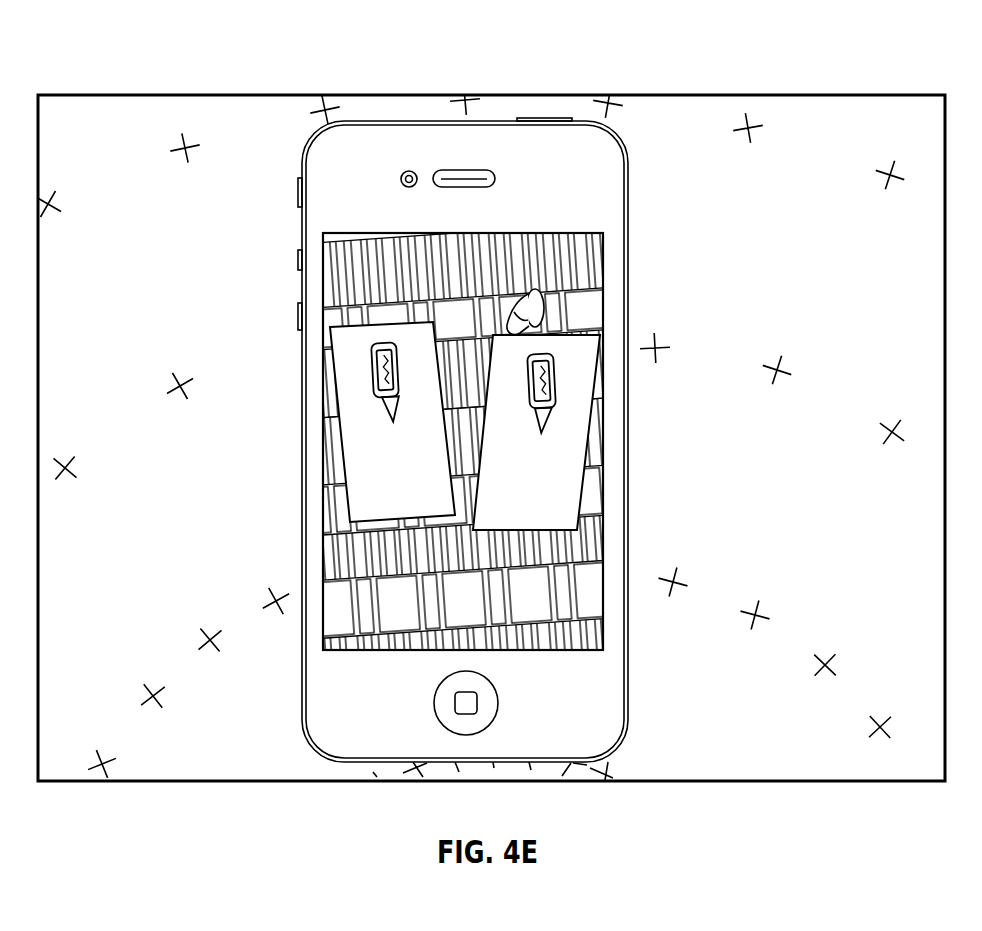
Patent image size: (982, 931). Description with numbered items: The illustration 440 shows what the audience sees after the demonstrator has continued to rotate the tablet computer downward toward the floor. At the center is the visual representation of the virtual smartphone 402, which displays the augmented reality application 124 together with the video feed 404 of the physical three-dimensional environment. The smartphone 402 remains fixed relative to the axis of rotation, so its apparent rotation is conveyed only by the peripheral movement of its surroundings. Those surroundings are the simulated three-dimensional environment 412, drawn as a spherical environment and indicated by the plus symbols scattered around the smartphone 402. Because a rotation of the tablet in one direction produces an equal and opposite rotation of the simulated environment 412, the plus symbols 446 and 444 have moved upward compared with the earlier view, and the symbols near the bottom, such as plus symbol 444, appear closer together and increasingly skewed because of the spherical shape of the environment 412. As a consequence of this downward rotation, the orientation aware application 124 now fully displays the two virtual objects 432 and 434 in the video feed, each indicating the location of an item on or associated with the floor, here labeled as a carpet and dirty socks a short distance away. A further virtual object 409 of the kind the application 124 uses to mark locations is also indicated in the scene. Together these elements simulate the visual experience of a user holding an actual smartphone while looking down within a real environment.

The simulated three-dimensional environment 412 is at (133, 107).
The virtual object 409 is at (858, 82).
The virtual smartphone 402 is at (638, 143).
The video feed 404 is at (347, 273).
The augmented reality application 124 is at (568, 285).
The virtual object 432 is at (352, 452).
The virtual object 434 is at (585, 458).
The plus symbol 446 is at (843, 638).
The plus symbol 444 is at (623, 762).
The illustration 440 is at (822, 843).